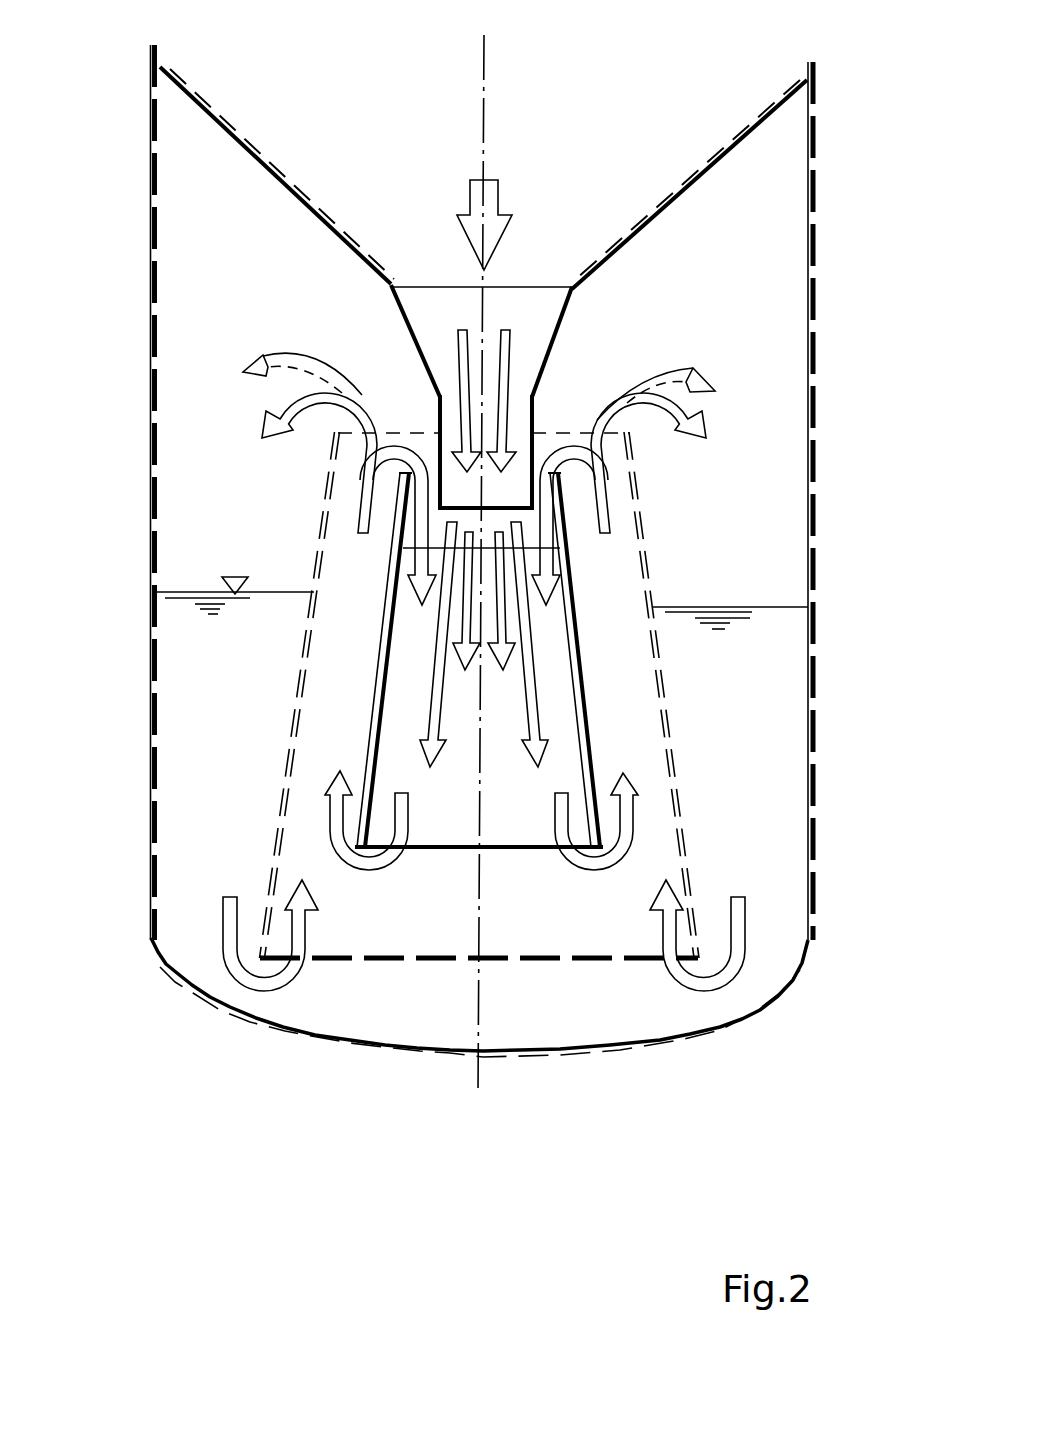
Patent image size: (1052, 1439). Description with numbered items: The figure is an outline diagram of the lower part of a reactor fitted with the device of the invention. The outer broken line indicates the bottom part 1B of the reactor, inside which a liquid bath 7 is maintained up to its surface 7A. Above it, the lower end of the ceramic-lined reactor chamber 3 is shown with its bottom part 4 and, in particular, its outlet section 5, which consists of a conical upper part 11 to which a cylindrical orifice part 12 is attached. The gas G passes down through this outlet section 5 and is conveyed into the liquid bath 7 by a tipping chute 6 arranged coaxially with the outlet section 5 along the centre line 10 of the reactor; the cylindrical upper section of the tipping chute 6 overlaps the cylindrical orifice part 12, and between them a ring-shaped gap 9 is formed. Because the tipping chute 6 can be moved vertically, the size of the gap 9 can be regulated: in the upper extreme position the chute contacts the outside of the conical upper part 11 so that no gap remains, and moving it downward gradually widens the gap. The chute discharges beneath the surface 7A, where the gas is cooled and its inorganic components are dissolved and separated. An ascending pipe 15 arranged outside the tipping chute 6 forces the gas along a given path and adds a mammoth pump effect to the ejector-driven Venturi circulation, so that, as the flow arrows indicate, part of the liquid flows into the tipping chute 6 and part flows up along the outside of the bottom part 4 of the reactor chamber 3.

The gas G is at (485, 193).
The lower part of the reactor 1B is at (135, 355).
The reactor chamber 3 is at (500, 77).
The bottom part of the reactor chamber 4 is at (640, 125).
The outlet section 5 is at (355, 352).
The tipping chute 6 is at (585, 683).
The liquid bath 7 is at (215, 837).
The surface of the liquid bath 7A is at (230, 578).
The ring-shaped gap 9 is at (530, 519).
The centre line 10 is at (483, 1082).
The conical upper part 11 is at (580, 315).
The cylindrical orifice part 12 is at (535, 424).
The ascending pipe 15 is at (677, 778).